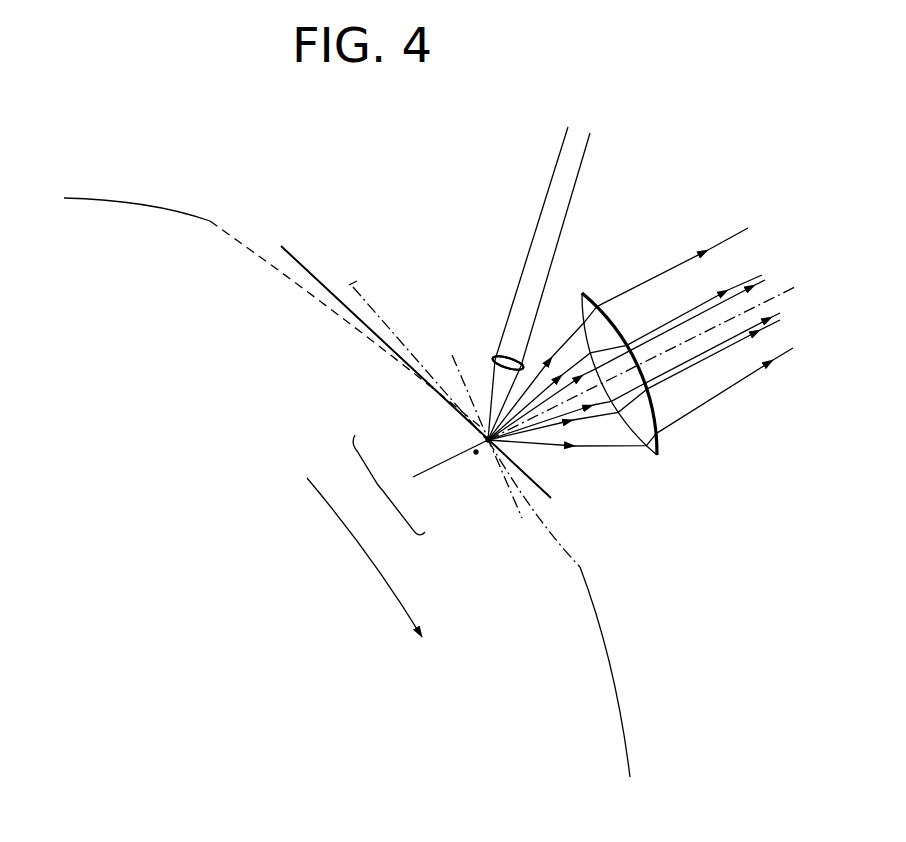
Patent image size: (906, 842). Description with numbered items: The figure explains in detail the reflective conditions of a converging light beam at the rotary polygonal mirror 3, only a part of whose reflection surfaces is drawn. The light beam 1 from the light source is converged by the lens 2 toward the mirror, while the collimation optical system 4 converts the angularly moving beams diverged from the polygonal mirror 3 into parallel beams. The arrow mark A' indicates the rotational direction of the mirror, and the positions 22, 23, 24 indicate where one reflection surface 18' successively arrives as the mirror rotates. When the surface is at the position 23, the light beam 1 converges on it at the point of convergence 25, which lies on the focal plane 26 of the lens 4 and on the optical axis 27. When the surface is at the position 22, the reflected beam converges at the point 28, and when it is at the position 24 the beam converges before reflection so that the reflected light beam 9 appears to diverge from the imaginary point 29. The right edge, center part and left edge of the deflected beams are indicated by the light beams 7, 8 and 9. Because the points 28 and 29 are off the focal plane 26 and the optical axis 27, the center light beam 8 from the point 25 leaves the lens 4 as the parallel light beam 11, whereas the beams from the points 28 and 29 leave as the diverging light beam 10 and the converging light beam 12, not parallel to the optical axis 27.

The light beam 1 is at (529, 263).
The lens 2 is at (506, 353).
The rotary polygonal mirror 3 is at (183, 232).
The collimation optical system 4 is at (658, 455).
The right edge of the light beams 7 is at (572, 330).
The center part of the light beams 8 is at (587, 398).
The left edge of the light beams 9 is at (615, 428).
The diverging light beam 10 is at (666, 298).
The parallel light beam 11 is at (675, 353).
The converging light beam 12 is at (720, 367).
The reflection surface 18' is at (386, 485).
The position of reflection surface 22 is at (243, 247).
The position of reflection surface 23 is at (296, 258).
The position of reflection surface 24 is at (358, 288).
The point of convergence 25 is at (486, 438).
The focal plane 26 is at (522, 518).
The optical axis 27 is at (778, 292).
The point of convergence 28 is at (494, 358).
The imaginary point of convergence 29 is at (476, 454).
The arrow mark A' is at (364, 557).